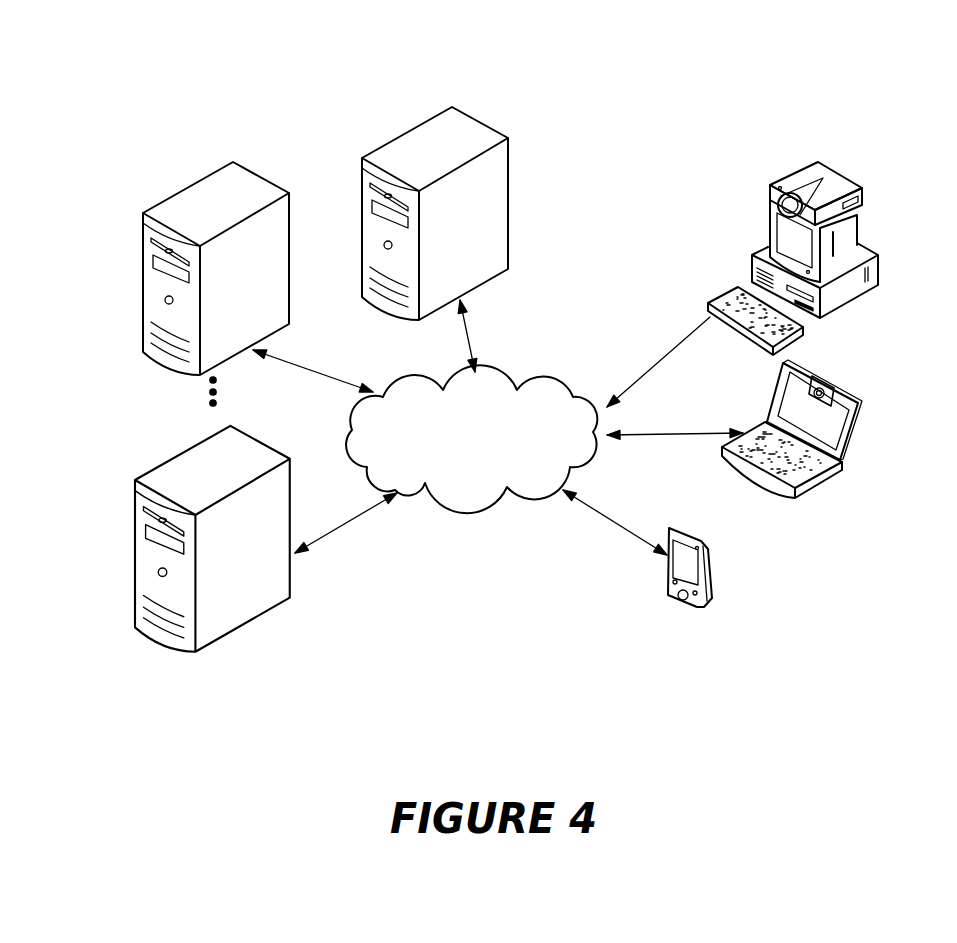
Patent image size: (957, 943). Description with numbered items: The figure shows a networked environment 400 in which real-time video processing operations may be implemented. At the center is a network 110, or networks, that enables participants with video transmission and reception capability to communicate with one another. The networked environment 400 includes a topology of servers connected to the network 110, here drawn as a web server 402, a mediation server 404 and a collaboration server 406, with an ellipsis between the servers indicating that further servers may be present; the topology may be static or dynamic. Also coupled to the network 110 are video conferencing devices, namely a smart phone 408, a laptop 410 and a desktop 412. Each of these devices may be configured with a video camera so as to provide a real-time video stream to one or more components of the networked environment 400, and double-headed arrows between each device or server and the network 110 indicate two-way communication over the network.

The networked environment 400 is at (702, 112).
The web server 402 is at (418, 147).
The mediation server 404 is at (182, 203).
The collaboration server 406 is at (182, 475).
The smart phone 408 is at (713, 543).
The laptop 410 is at (858, 403).
The desktop 412 is at (755, 255).
The network 110 is at (475, 502).